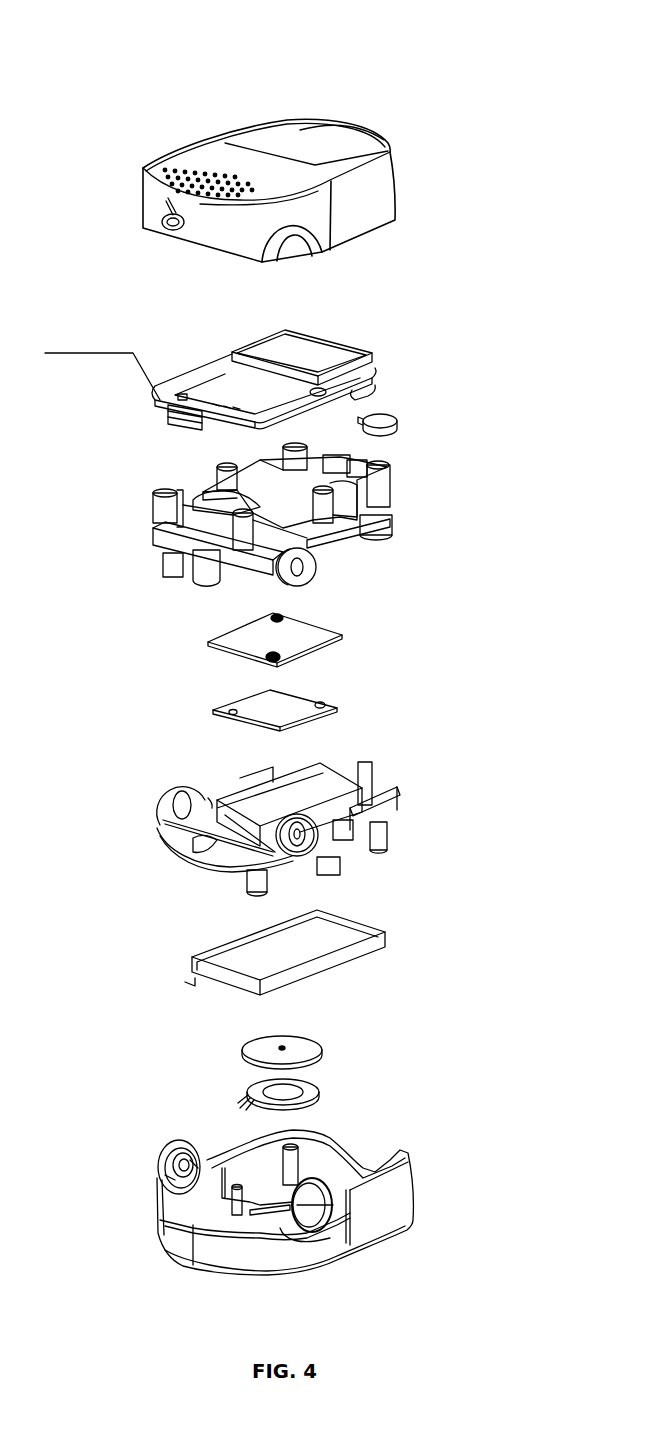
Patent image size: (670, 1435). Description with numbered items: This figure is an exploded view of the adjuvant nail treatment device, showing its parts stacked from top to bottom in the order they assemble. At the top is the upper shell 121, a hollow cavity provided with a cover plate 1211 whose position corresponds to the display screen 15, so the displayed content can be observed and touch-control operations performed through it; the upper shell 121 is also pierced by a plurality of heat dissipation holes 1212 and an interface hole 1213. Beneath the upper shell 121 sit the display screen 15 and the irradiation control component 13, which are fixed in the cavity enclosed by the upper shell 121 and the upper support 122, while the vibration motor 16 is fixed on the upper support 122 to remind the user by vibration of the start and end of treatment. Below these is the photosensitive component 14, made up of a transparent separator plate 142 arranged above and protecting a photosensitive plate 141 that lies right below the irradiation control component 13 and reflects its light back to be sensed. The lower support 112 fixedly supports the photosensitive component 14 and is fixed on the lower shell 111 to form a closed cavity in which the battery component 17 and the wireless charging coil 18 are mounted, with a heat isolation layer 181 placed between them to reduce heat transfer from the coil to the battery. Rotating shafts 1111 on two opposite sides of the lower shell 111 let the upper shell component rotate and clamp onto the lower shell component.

The upper shell 121 is at (242, 157).
The cover plate 1211 is at (260, 75).
The heat dissipation holes 1212 is at (172, 146).
The interface hole 1213 is at (118, 181).
The irradiation control component 13 is at (208, 348).
The display screen 15 is at (222, 308).
The vibration motor 16 is at (455, 355).
The upper support 122 is at (216, 485).
The photosensitive component 14 is at (196, 644).
The separator plate 142 is at (222, 612).
The photosensitive plate 141 is at (224, 670).
The lower support 112 is at (231, 820).
The battery component 17 is at (234, 931).
The heat isolation layer 181 is at (227, 1022).
The wireless charging coil 18 is at (227, 1063).
The lower shell 111 is at (226, 1159).
The rotating shafts 1111 is at (124, 1149).